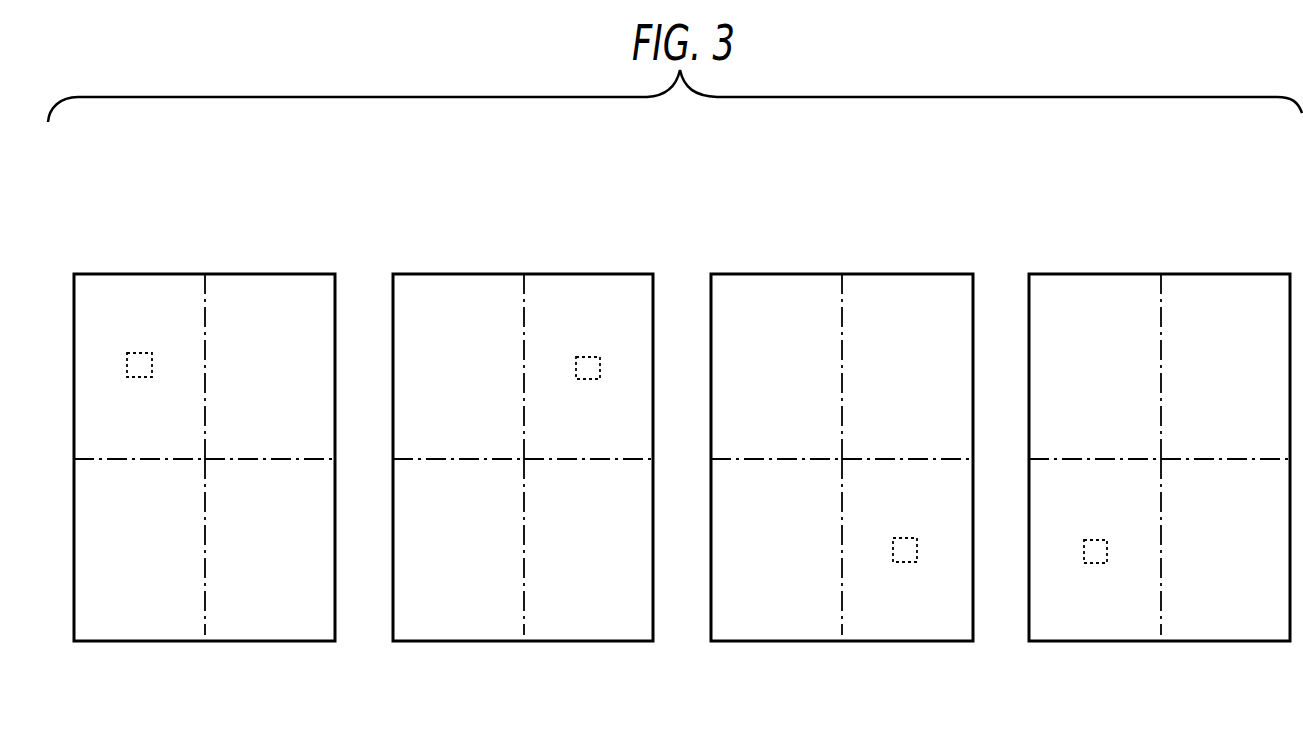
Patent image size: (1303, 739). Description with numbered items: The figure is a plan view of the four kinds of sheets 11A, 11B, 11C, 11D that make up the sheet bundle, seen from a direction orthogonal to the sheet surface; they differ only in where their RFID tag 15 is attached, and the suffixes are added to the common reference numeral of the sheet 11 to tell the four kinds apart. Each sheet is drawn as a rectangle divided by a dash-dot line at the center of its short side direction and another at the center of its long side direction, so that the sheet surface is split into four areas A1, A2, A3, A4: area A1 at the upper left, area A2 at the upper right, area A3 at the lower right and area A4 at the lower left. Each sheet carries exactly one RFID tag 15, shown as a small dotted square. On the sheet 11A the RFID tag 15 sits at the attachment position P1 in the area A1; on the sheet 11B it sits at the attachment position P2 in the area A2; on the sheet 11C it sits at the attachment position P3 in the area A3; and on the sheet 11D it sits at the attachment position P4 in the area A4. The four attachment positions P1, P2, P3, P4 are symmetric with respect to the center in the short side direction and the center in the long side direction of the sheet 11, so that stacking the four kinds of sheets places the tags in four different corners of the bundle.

The sheet 11 is at (682, 400).
The sheet 11A is at (211, 208).
The sheet 11B is at (530, 208).
The sheet 11C is at (848, 208).
The sheet 11D is at (1167, 208).
The area A1 is at (142, 274).
The area A2 is at (266, 274).
The area A3 is at (272, 633).
The area A4 is at (140, 633).
The attachment position P1 is at (147, 342).
The attachment position P2 is at (593, 345).
The attachment position P3 is at (909, 525).
The attachment position P4 is at (1100, 528).
The RFID tag 15 is at (612, 453).